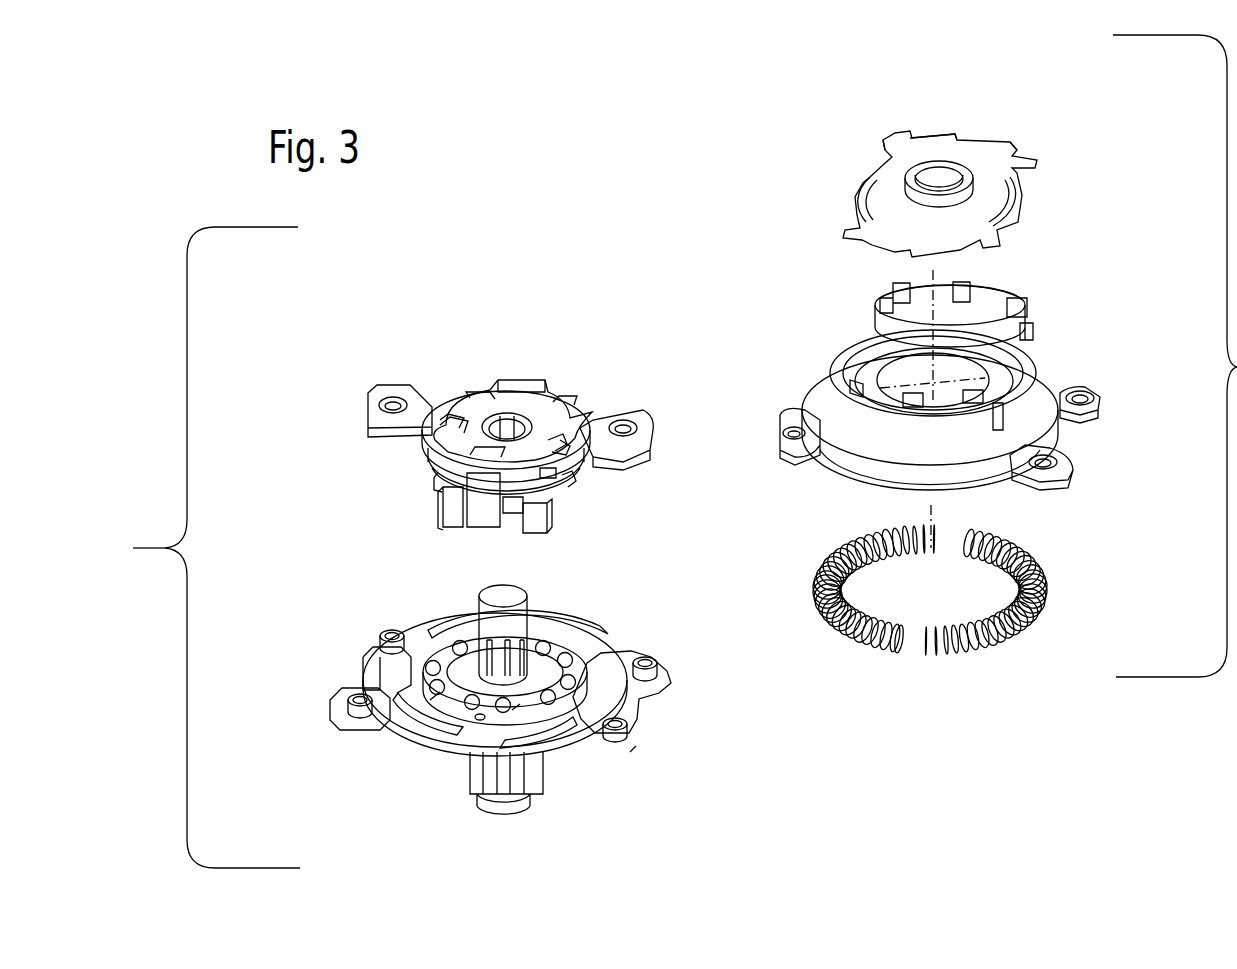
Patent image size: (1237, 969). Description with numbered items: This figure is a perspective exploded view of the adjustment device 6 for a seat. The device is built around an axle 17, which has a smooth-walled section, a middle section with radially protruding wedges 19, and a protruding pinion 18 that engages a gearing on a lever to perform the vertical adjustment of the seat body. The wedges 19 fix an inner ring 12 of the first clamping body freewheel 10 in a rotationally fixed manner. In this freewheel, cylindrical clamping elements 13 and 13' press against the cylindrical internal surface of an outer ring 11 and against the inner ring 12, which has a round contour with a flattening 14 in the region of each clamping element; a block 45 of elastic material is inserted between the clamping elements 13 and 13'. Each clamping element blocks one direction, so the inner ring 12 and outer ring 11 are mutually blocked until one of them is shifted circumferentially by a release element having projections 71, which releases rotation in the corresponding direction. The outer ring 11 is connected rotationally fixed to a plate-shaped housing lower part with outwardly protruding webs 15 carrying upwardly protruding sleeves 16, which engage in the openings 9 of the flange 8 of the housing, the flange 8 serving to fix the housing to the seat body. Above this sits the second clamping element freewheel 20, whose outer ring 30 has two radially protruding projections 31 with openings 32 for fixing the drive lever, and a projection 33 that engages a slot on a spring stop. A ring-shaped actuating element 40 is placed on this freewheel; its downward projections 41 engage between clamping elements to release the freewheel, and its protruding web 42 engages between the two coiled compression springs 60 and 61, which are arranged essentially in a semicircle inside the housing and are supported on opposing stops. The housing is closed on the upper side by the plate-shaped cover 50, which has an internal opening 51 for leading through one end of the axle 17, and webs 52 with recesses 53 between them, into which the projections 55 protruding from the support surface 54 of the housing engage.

The adjustment device 6 is at (913, 459).
The flange 8 is at (790, 420).
The openings 9 is at (1090, 401).
The first clamping body freewheel 10 is at (488, 703).
The outer ring 11 is at (610, 682).
The inner ring 12 is at (497, 702).
The clamping element 13 is at (455, 730).
The clamping element 13' is at (498, 762).
The flattening 14 is at (450, 668).
The webs 15 is at (366, 686).
The sleeves 16 is at (376, 632).
The axle 17 is at (525, 619).
The pinion 18 is at (518, 778).
The wedges 19 is at (480, 632).
The second clamping element freewheel 20 is at (470, 415).
The outer ring 30 is at (478, 400).
The projections 31 is at (388, 388).
The openings 32 is at (380, 407).
The projection 33 is at (483, 518).
The actuating element 40 is at (531, 364).
The projections 41 is at (545, 478).
The web 42 is at (527, 388).
The block 45 is at (565, 645).
The cover 50 is at (962, 307).
The internal opening 51 is at (975, 178).
The webs 52 is at (922, 130).
The recesses 53 is at (897, 134).
The support surface 54 is at (893, 287).
The projections 55 is at (892, 290).
The spring 60 is at (987, 617).
The spring 61 is at (838, 632).
The projections 71 is at (548, 520).